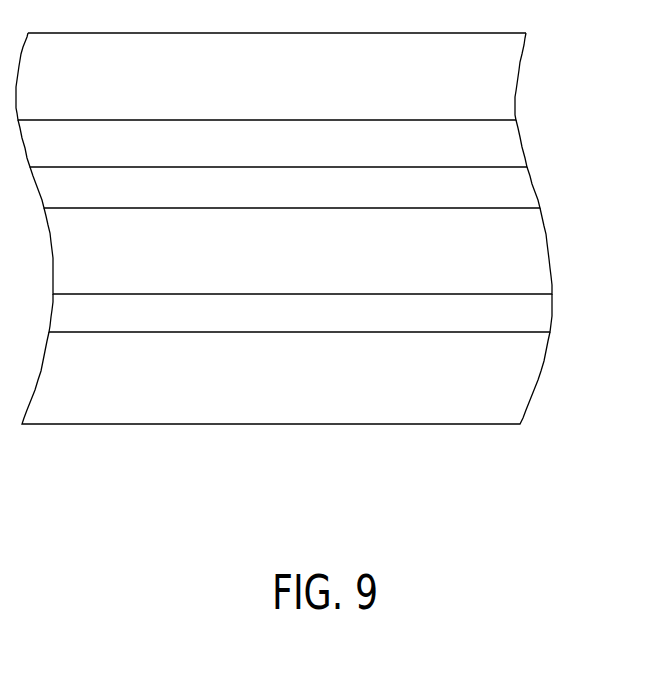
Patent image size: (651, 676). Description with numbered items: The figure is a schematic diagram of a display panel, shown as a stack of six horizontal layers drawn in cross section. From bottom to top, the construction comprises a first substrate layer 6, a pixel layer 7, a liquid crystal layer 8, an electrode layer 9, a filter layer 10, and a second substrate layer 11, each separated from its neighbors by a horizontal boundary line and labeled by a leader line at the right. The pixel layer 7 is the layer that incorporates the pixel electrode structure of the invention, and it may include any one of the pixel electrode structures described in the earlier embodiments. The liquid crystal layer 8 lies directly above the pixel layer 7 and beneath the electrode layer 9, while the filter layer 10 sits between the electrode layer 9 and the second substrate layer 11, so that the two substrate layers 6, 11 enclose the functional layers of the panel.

The first substrate layer 6 is at (511, 376).
The pixel layer 7 is at (511, 314).
The liquid crystal layer 8 is at (511, 241).
The electrode layer 9 is at (511, 186).
The filter layer 10 is at (513, 139).
The second substrate layer 11 is at (513, 73).